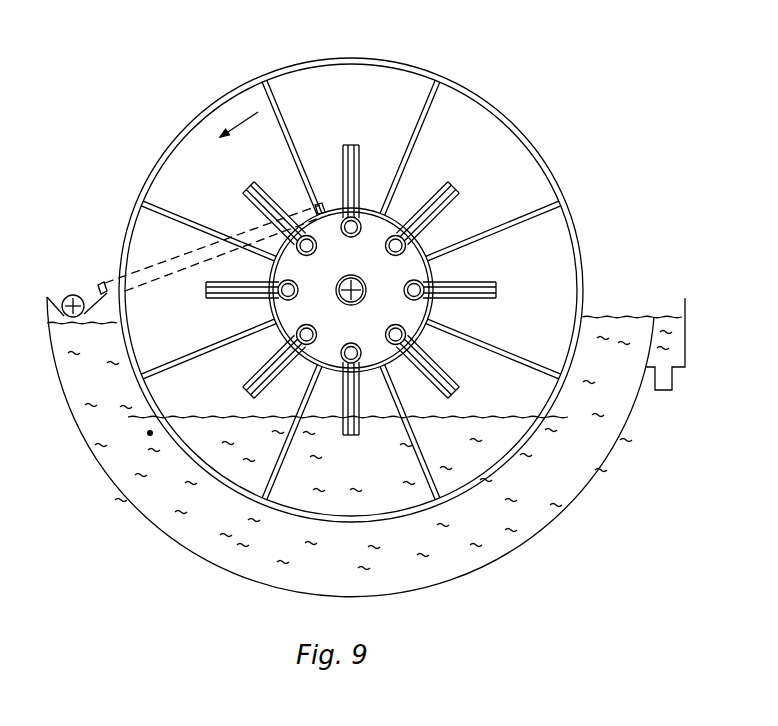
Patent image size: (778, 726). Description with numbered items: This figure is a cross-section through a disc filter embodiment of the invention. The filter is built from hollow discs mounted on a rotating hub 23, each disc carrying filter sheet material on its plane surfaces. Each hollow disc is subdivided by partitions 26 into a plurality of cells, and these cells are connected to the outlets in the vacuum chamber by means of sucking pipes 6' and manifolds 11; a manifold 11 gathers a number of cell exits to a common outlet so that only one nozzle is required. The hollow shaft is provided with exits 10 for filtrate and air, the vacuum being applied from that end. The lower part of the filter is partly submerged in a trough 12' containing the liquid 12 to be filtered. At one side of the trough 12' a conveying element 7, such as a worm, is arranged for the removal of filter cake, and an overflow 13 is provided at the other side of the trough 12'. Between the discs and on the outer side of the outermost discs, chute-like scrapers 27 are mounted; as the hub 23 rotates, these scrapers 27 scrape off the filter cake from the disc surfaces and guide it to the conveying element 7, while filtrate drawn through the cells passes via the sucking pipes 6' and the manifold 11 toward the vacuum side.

The partitions 26 is at (209, 228).
The sucking pipes 6' is at (273, 219).
The rotating hub 23 is at (421, 240).
The exits for filtrate and air 10 is at (361, 284).
The manifold 11 is at (272, 314).
The chute-like scrapers 27 is at (144, 268).
The conveying element 7 is at (78, 294).
The overflow 13 is at (648, 317).
The liquid to be filtered 12 is at (364, 443).
The trough 12' is at (350, 447).